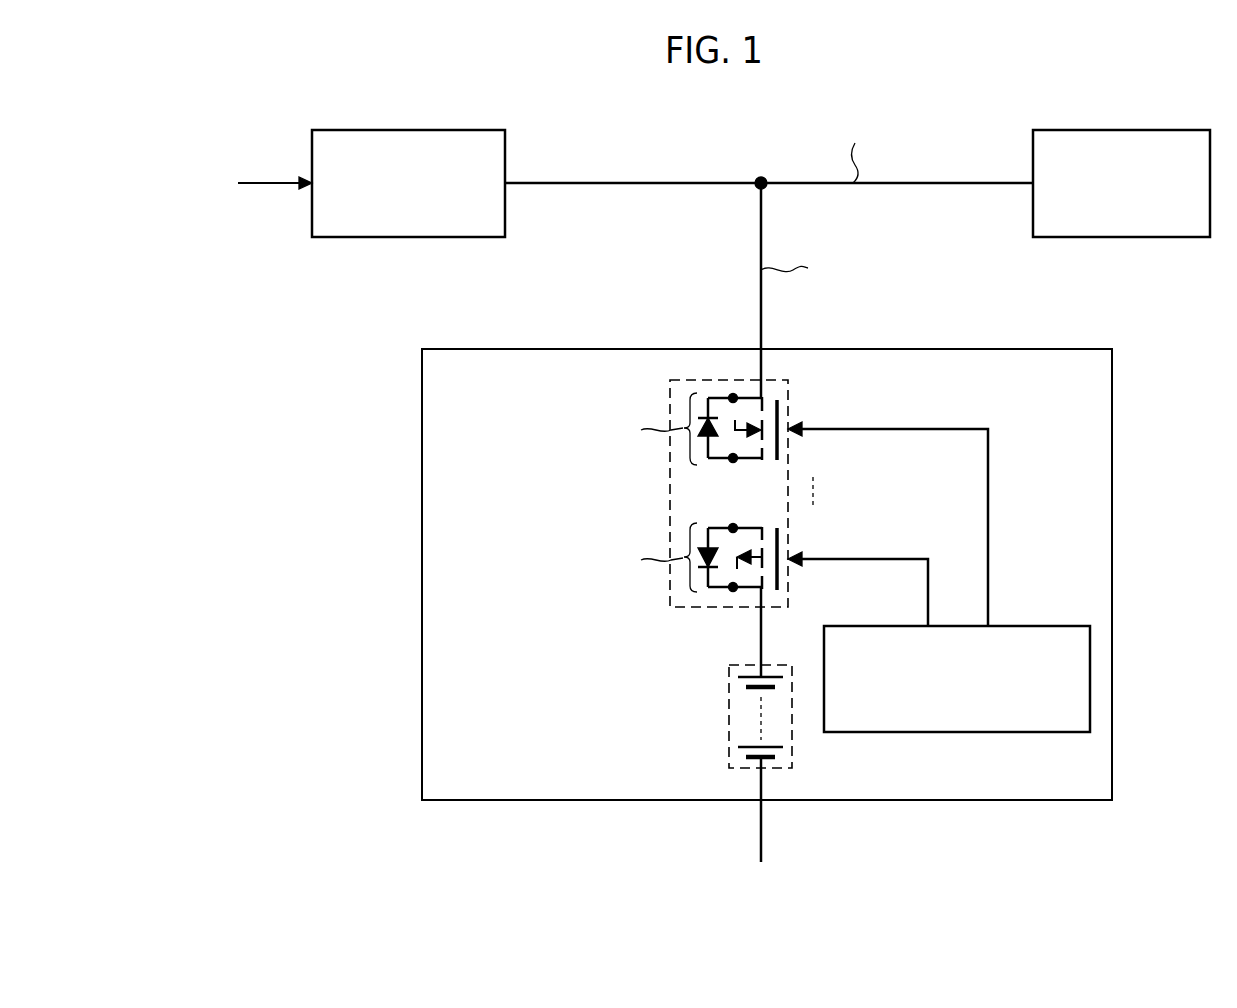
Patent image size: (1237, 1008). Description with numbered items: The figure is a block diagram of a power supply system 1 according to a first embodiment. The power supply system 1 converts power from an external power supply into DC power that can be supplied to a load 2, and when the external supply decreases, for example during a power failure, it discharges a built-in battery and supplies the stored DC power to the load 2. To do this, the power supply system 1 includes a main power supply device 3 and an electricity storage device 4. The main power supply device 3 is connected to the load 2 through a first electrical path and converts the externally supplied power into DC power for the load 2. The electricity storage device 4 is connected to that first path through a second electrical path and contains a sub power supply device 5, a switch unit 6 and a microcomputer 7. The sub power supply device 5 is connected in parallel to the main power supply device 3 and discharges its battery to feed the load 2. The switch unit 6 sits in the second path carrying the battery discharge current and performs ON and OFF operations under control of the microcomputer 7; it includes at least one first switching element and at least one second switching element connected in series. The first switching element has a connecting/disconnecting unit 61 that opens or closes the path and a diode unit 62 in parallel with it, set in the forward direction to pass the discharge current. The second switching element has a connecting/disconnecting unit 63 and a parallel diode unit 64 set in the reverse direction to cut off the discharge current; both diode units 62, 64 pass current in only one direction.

The power supply system 1 is at (366, 589).
The load 2 is at (1158, 237).
The main power supply device 3 is at (445, 237).
The electricity storage device 4 is at (1112, 398).
The sub power supply device 5 is at (729, 733).
The switch unit 6 is at (668, 488).
The microcomputer 7 is at (997, 732).
The connecting/disconnecting unit 61 is at (786, 406).
The diode unit 62 is at (702, 401).
The connecting/disconnecting unit 63 is at (786, 584).
The diode unit 64 is at (701, 582).